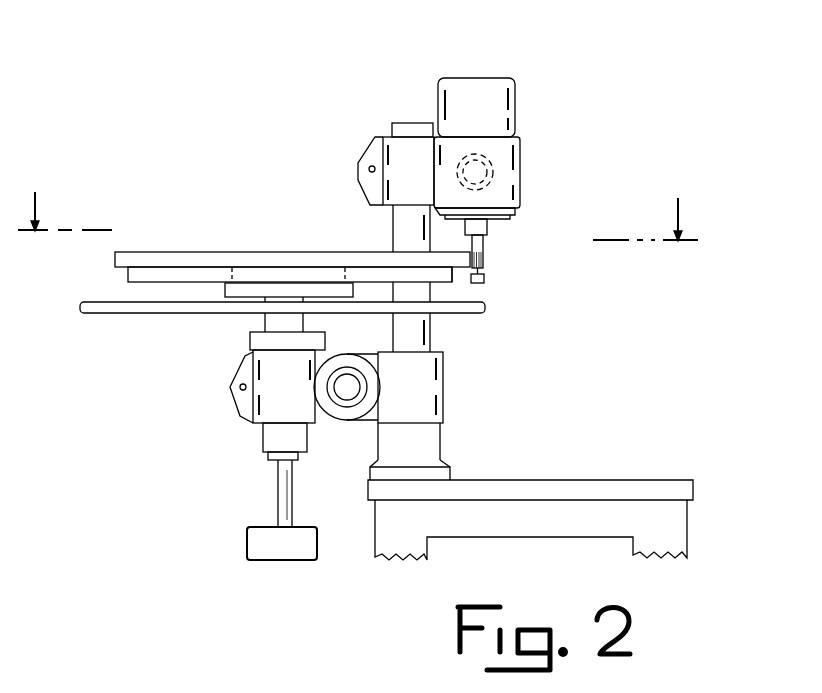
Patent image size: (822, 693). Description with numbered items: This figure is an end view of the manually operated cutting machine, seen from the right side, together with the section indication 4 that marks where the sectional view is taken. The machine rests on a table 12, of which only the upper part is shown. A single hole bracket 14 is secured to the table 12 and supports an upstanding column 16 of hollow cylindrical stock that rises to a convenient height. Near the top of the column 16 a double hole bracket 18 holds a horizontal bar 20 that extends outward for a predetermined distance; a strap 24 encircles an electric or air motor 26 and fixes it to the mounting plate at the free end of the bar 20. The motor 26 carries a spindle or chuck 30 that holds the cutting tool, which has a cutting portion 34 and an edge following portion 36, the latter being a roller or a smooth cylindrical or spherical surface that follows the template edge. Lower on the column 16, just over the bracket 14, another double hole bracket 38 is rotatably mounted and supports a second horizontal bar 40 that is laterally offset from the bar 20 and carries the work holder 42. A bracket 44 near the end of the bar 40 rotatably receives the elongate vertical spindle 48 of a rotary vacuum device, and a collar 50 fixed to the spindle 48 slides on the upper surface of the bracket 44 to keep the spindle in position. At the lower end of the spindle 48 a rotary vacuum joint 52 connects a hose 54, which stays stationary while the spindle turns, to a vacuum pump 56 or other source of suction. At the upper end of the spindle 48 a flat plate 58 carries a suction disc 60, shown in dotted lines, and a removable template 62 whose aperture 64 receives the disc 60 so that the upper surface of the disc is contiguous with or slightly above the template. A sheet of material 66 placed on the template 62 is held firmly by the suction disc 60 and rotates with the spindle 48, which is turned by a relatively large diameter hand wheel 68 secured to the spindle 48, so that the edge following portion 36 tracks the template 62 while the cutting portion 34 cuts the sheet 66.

The section line 4- 4 is at (358, 198).
The table 12 is at (577, 465).
The single hole bracket 14 is at (443, 453).
The upstanding column 16 is at (393, 223).
The double hole bracket 18 is at (377, 137).
The horizontal bar 20 is at (495, 166).
The strap 24 is at (520, 180).
The motor 26 is at (503, 77).
The spindle or chuck 30 is at (488, 226).
The cutting portion 34 is at (483, 249).
The edge following portion 36 is at (485, 278).
The double hole bracket 38 is at (443, 375).
The horizontal bar 40 is at (348, 405).
The work holder 42 is at (127, 353).
The bracket 44 is at (247, 420).
The spindle 48 is at (267, 322).
The collar 50 is at (250, 340).
The rotary vacuum joint 52 is at (270, 462).
The hose 54 is at (277, 488).
The vacuum pump 56 is at (247, 540).
The flat plate 58 is at (225, 288).
The suction disc 60 is at (290, 263).
The template 62 is at (453, 282).
The aperture 64 is at (230, 277).
The sheet of material 66 is at (115, 258).
The hand wheel 68 is at (80, 307).